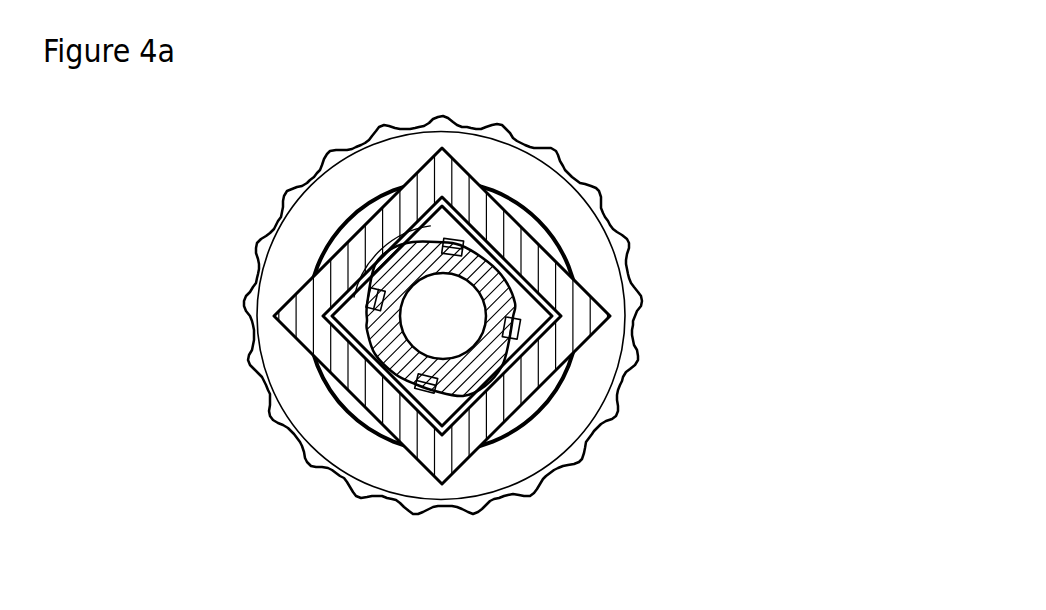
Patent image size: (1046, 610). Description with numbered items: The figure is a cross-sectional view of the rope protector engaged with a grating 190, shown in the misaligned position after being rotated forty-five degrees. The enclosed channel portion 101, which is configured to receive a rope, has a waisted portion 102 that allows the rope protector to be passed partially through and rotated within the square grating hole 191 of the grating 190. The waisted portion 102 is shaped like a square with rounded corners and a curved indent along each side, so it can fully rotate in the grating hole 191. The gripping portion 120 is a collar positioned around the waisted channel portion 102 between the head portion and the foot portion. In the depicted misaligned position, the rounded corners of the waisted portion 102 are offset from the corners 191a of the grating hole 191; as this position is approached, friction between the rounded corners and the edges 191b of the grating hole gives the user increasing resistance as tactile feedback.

The gripping portion 120 is at (530, 143).
The grating 190 is at (548, 345).
The grating hole 191 is at (533, 315).
The corners of the grating hole 191a is at (443, 312).
The edges of the grating hole 191b is at (505, 258).
The enclosed channel portion 101 is at (410, 277).
The waisted portion 102 is at (405, 367).